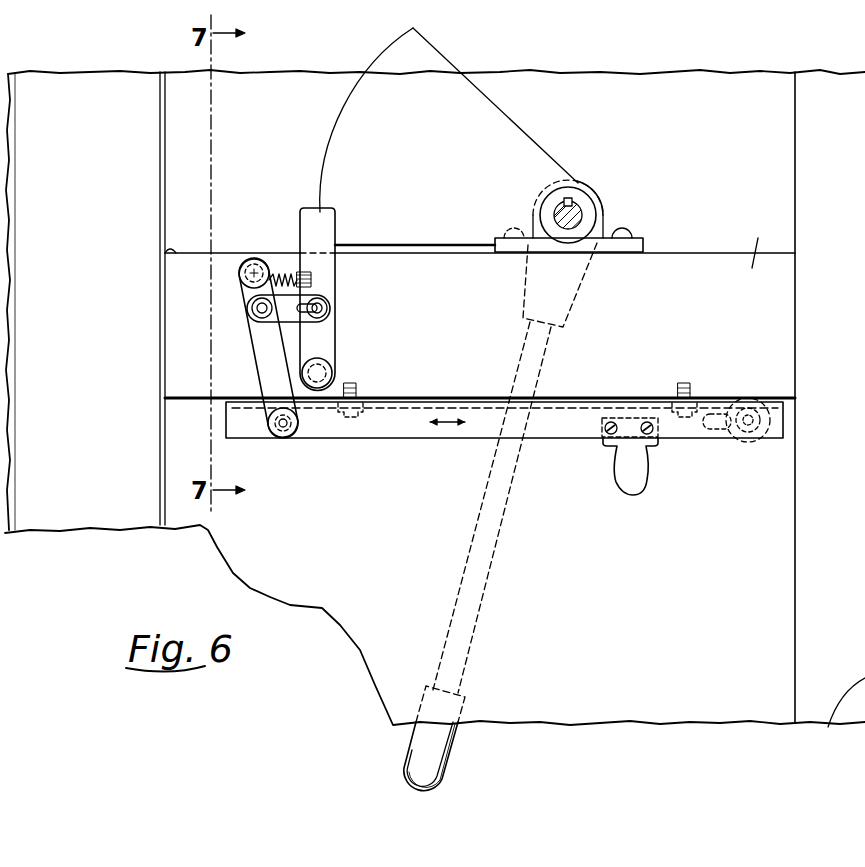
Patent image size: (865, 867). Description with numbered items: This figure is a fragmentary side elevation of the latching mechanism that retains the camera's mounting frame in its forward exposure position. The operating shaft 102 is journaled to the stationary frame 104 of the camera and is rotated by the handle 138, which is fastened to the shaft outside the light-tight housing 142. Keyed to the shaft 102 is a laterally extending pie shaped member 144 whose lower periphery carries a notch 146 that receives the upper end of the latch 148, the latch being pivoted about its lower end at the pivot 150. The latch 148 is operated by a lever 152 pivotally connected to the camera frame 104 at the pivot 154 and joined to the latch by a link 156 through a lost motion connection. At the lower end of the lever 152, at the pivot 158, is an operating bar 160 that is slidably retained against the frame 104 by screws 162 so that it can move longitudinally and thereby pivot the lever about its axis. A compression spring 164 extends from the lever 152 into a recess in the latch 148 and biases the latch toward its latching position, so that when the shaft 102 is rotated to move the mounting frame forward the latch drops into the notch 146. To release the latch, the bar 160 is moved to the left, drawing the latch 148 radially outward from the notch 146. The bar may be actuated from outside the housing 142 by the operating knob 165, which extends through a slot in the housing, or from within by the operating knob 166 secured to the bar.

The operating shaft 102 is at (582, 212).
The stationary frame 104 is at (187, 263).
The handle 138 is at (490, 570).
The light-tight housing 142 is at (755, 707).
The pie shaped member 144 is at (497, 128).
The notch 146 is at (320, 211).
The latch 148 is at (305, 235).
The pivot 150 is at (327, 367).
The lever 152 is at (262, 358).
The pivot 154 is at (245, 277).
The link 156 is at (289, 318).
The pivot 158 is at (283, 433).
The operating bar 160 is at (405, 433).
The screws 162 is at (350, 413).
The compression spring 164 is at (288, 280).
The operating knob 165 is at (748, 445).
The operating knob 166 is at (633, 470).